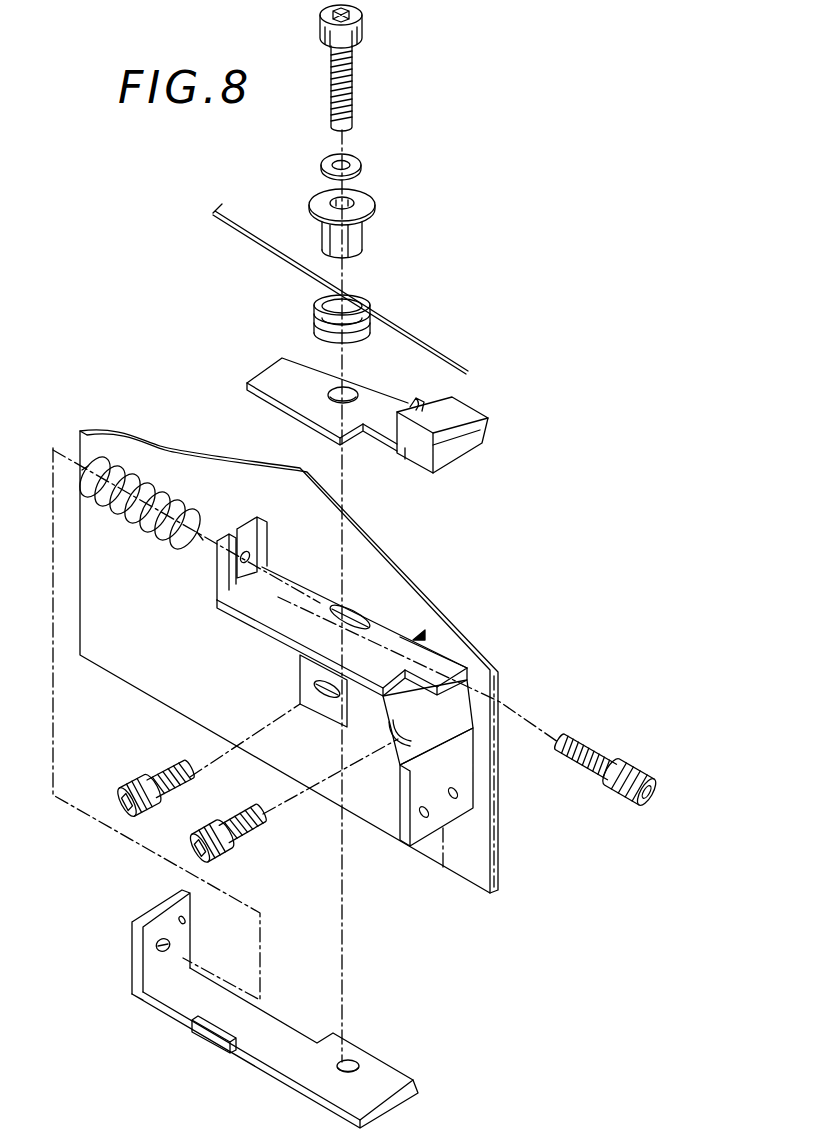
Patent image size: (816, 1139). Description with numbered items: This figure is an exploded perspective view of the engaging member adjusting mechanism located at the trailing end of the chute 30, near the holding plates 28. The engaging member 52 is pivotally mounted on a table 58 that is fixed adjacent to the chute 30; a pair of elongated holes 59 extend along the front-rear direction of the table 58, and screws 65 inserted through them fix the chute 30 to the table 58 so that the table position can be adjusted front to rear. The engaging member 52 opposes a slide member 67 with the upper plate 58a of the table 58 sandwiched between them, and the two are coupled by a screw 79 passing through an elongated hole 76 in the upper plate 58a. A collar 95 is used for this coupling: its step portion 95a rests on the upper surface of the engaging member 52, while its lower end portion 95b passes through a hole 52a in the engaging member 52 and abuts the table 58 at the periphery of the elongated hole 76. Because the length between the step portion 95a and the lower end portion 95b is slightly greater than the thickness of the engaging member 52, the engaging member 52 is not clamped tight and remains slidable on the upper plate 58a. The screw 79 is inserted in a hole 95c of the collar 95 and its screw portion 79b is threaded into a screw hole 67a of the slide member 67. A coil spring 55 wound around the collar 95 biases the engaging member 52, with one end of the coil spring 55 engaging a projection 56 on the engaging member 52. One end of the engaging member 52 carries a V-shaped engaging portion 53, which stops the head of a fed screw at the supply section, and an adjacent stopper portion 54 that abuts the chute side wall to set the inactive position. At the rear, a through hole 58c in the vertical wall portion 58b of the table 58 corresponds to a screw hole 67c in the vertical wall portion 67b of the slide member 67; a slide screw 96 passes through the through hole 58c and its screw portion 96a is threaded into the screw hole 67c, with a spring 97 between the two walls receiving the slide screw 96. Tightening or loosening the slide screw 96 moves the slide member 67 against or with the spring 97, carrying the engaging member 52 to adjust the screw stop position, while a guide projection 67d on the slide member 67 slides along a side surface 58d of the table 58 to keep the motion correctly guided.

The screw 79 is at (352, 81).
The screw portion of screw 79b is at (352, 117).
The collar 95 is at (367, 228).
The step portion of collar 95a is at (362, 237).
The lower end portion of collar 95b is at (356, 248).
The hole of collar 95c is at (347, 201).
The coil spring 55 is at (369, 304).
The engaging member 52 is at (290, 393).
The hole in engaging member 52a is at (350, 391).
The engaging portion 53 is at (491, 428).
The stopper portion 54 is at (420, 401).
The projection 56 is at (427, 442).
The holding plate 28 is at (483, 841).
The chute 30 is at (73, 793).
The spring 97 is at (165, 490).
The table 58 is at (298, 680).
The upper plate of table 58a is at (405, 630).
The vertical wall portion of table 58b is at (267, 535).
The through hole 58c is at (238, 592).
The side surface of table 58d is at (278, 620).
The elongated hole of upper plate 76 is at (362, 610).
The elongated holes 59 is at (332, 703).
The slide screw 96 is at (602, 750).
The screw portion of slide screw 96a is at (560, 748).
The screws 65 is at (243, 817).
The slide member 67 is at (300, 1042).
The screw hole of slide member 67a is at (356, 1062).
The vertical wall portion of slide member 67b is at (185, 933).
The screw hole 67c is at (160, 948).
The guide projection 67d is at (208, 1040).